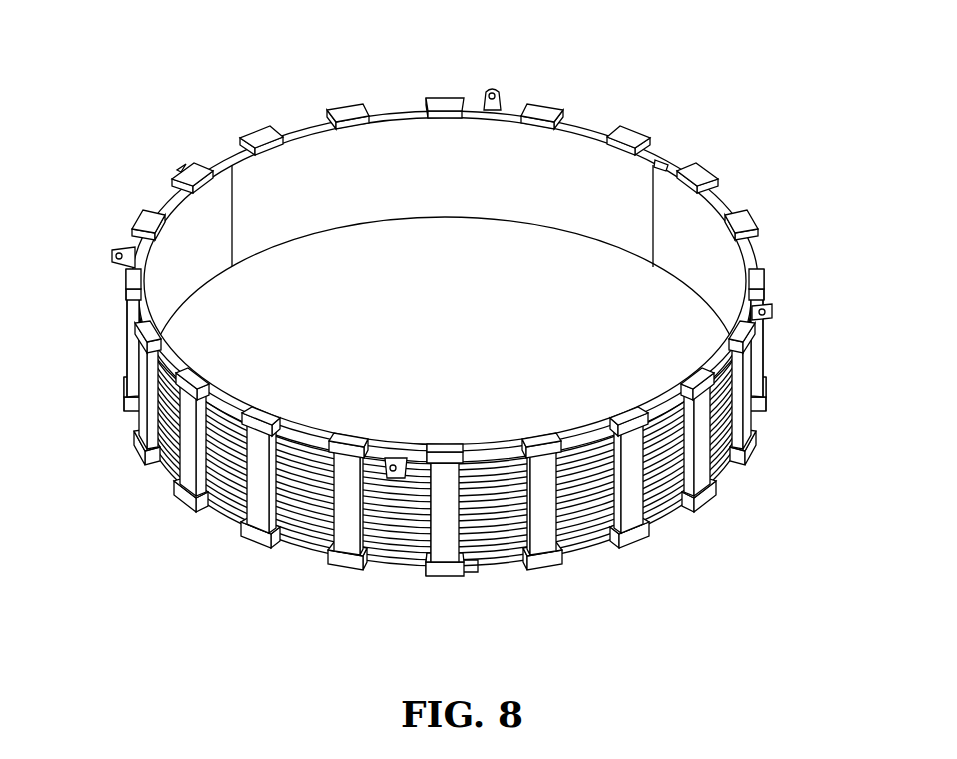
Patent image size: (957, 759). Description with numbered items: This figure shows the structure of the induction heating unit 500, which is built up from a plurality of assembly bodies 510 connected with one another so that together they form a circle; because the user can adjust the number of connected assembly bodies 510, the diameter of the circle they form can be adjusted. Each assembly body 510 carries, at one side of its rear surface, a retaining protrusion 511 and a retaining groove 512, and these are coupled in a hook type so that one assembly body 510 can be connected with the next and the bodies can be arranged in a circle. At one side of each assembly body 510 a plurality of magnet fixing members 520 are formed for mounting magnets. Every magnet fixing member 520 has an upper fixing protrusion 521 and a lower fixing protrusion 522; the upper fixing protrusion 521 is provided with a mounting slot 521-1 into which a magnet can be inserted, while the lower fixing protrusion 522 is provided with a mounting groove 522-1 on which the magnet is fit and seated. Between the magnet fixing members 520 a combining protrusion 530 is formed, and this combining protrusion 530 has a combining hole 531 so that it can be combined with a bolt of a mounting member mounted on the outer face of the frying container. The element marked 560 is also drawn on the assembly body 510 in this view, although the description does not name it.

The induction heating unit 500 is at (313, 47).
The assembly body 510 is at (303, 434).
The retaining protrusion 511 is at (653, 163).
The retaining groove 512 is at (668, 166).
The magnet fixing member 520 is at (401, 264).
The upper fixing protrusion 521 is at (170, 187).
The mounting slot 521-1 is at (187, 166).
The lower fixing protrusion 522 is at (446, 578).
The mounting groove 522-1 is at (474, 569).
The combining protrusion 530 is at (479, 441).
The combining hole 531 is at (773, 312).
The tooth 560 is at (705, 472).